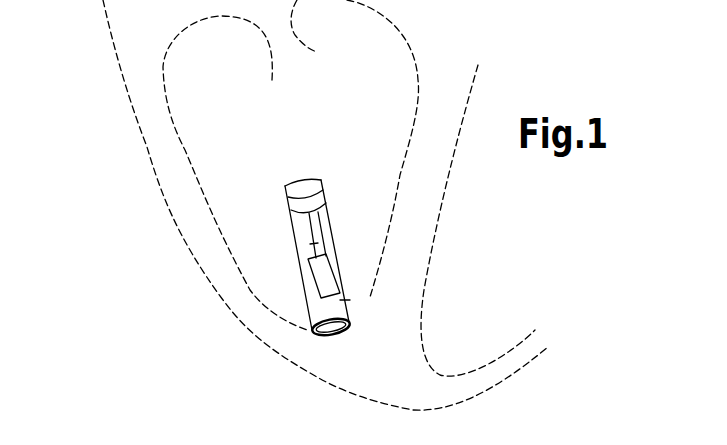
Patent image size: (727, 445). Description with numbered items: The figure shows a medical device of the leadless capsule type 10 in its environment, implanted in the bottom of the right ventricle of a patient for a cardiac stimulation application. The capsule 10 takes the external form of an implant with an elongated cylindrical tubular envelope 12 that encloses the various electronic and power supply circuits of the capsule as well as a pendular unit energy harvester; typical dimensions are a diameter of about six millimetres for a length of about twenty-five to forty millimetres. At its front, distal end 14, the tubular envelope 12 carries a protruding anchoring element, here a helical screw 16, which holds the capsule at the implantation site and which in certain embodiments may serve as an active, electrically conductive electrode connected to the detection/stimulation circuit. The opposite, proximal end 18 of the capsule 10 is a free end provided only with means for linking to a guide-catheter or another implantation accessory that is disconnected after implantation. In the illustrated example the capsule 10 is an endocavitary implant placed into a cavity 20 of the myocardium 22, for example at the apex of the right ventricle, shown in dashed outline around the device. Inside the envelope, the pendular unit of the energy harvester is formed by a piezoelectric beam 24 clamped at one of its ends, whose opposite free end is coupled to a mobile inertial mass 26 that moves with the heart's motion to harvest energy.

The leadless capsule 10 is at (356, 172).
The tubular envelope 12 is at (292, 229).
The front (distal) end 14 is at (350, 300).
The helical screw 16 is at (318, 340).
The proximal end 18 is at (307, 183).
The cavity 20 is at (235, 109).
The myocardium 22 is at (168, 170).
The piezoelectric beam 24 is at (310, 244).
The mobile inertial mass 26 is at (336, 272).